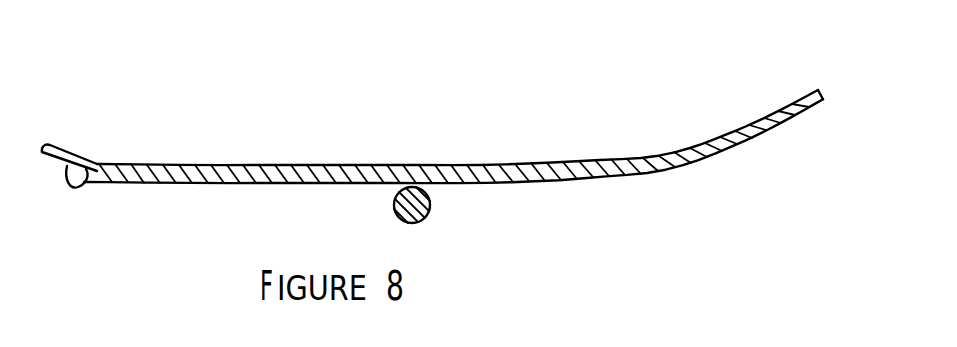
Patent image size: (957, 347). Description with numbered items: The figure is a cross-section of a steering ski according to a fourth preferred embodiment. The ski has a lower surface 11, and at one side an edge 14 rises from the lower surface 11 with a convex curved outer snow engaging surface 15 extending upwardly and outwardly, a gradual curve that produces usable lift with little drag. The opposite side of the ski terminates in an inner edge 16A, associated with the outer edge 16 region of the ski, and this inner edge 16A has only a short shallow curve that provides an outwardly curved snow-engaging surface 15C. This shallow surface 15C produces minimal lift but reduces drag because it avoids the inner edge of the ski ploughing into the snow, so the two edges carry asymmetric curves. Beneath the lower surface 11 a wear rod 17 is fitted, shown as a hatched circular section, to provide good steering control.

The lower surface 11 is at (450, 184).
The edge 14 is at (752, 126).
The snow engaging surface 15 is at (782, 122).
The outwardly curved snow-engaging surface 15C is at (95, 164).
The edge 16 is at (817, 88).
The inner edge 16A is at (45, 148).
The wear rod 17 is at (393, 205).